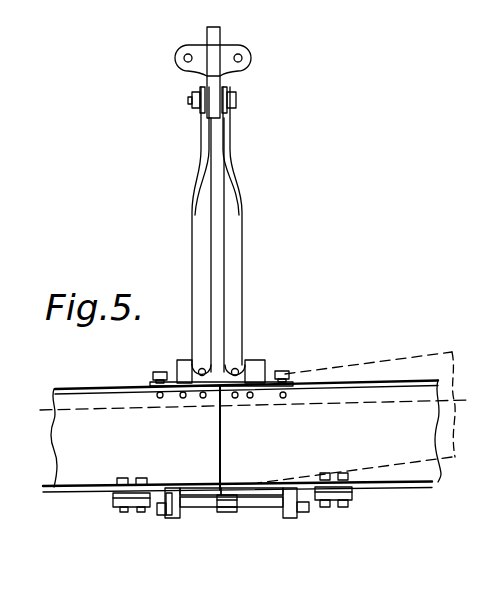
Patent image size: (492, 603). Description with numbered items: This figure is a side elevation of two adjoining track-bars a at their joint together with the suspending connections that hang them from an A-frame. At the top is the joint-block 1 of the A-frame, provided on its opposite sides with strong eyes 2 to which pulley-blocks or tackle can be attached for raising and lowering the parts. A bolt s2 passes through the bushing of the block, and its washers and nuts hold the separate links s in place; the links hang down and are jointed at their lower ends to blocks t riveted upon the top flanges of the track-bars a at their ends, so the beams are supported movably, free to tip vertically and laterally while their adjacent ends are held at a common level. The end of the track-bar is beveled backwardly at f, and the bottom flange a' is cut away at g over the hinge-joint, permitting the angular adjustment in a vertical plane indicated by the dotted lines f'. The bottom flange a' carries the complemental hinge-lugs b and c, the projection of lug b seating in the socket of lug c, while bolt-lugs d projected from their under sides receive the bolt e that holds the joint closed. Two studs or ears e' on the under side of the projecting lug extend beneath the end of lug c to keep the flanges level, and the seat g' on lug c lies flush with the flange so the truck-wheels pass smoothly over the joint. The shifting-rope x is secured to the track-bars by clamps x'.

The joint-block 1 is at (222, 27).
The eyes 2 is at (176, 58).
The bolt s2 is at (188, 100).
The links s is at (191, 243).
The beveled end of the track-bar f is at (232, 304).
The blocks t is at (176, 370).
The track-bars a is at (242, 436).
The shifting-rope x is at (242, 426).
The dotted lines indicating angular adjustment f' is at (370, 383).
The bottom flange a' is at (355, 464).
The clamps x' is at (232, 503).
The hinge-lug b is at (197, 495).
The seat g' is at (206, 468).
The cut-away portion g is at (252, 468).
The hinge-lug c is at (272, 490).
The studs or ears e' is at (243, 516).
The bolt-lugs d is at (157, 512).
The bolt e is at (314, 519).